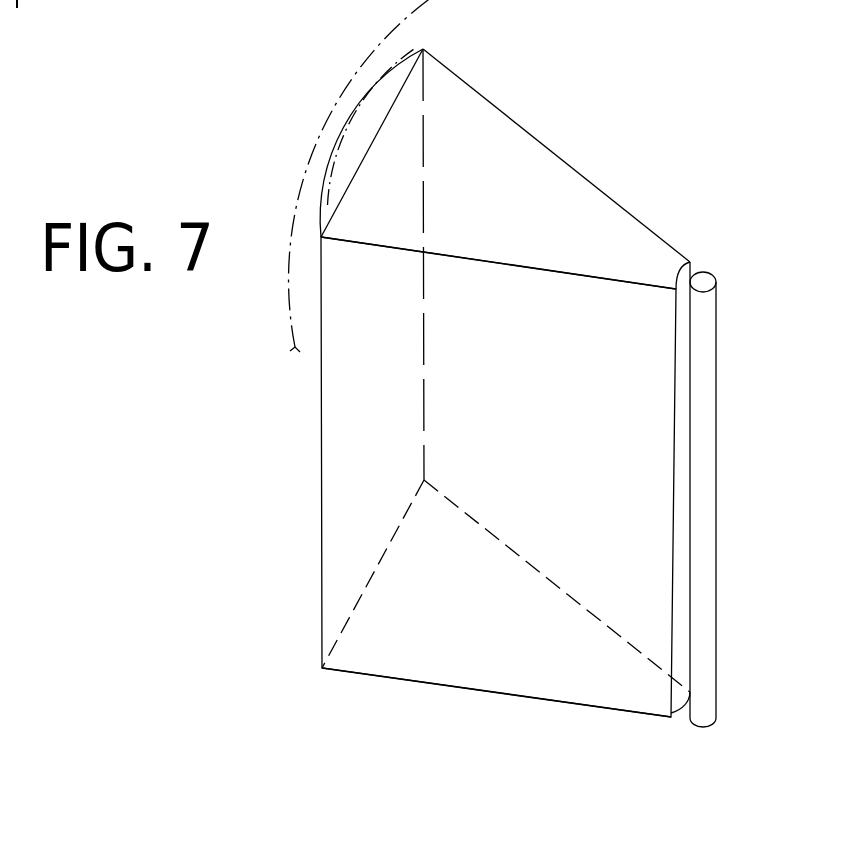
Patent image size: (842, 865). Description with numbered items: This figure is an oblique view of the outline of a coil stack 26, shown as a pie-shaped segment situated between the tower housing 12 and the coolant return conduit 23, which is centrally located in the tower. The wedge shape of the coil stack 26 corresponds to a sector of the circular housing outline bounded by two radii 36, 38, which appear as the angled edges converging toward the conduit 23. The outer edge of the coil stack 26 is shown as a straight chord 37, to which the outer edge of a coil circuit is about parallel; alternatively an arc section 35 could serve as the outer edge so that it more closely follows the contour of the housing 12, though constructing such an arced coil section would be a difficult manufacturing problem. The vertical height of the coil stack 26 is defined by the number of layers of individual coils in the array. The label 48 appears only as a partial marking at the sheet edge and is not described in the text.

The arcuate path 12 is at (402, 22).
The pivot rod 23 is at (718, 371).
The wedge member 26 is at (518, 122).
The curved surface 35 is at (322, 208).
The edge 36 is at (590, 179).
The edge 37 is at (371, 143).
The front edge 38 is at (532, 270).
The reference (partial) 48 is at (447, 10).